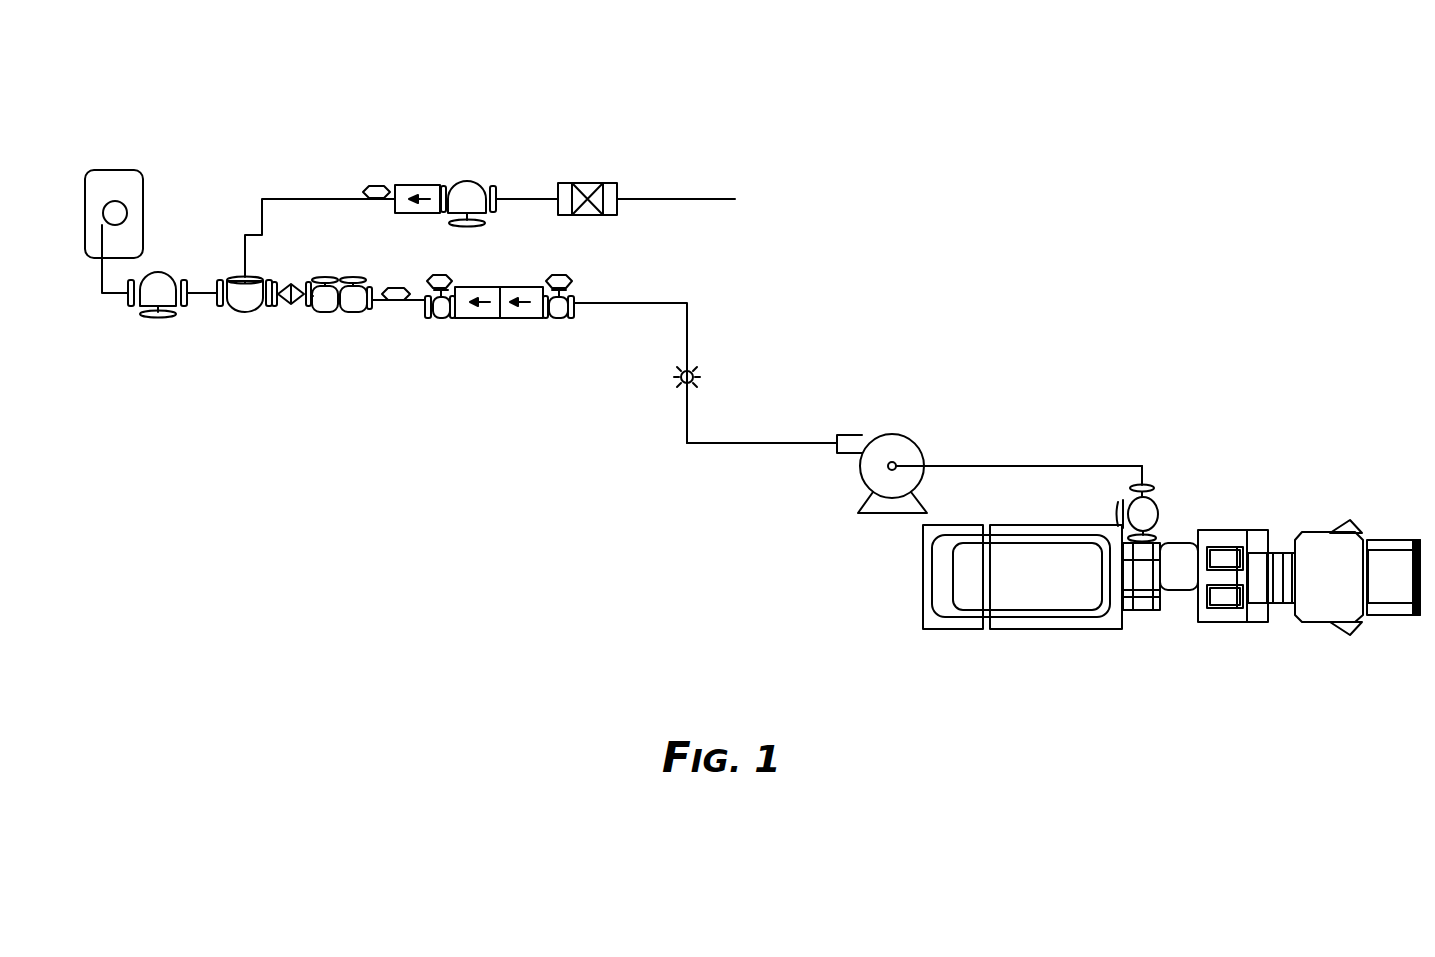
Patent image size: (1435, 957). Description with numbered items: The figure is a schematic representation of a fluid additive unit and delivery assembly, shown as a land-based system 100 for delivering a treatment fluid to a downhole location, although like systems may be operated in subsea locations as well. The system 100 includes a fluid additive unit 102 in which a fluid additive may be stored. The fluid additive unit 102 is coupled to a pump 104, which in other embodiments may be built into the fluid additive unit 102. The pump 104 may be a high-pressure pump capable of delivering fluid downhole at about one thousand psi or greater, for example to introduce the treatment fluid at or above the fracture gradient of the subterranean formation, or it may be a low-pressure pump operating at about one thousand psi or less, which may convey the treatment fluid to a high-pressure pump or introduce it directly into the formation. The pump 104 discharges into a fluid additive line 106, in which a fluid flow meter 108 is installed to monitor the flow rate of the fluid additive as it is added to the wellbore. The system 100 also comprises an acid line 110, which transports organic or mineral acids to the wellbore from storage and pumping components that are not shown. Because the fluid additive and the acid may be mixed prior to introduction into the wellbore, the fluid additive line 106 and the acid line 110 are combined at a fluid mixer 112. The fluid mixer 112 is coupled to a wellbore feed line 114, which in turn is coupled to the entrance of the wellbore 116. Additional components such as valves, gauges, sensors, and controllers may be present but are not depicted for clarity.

The system 100 is at (903, 123).
The fluid additive unit 102 is at (1003, 630).
The pump 104 is at (882, 435).
The fluid additive line 106 is at (778, 442).
The fluid flow meter 108 is at (672, 375).
The acid line 110 is at (715, 198).
The fluid mixer 112 is at (248, 317).
The wellbore feed line 114 is at (117, 295).
The wellbore 116 is at (145, 185).